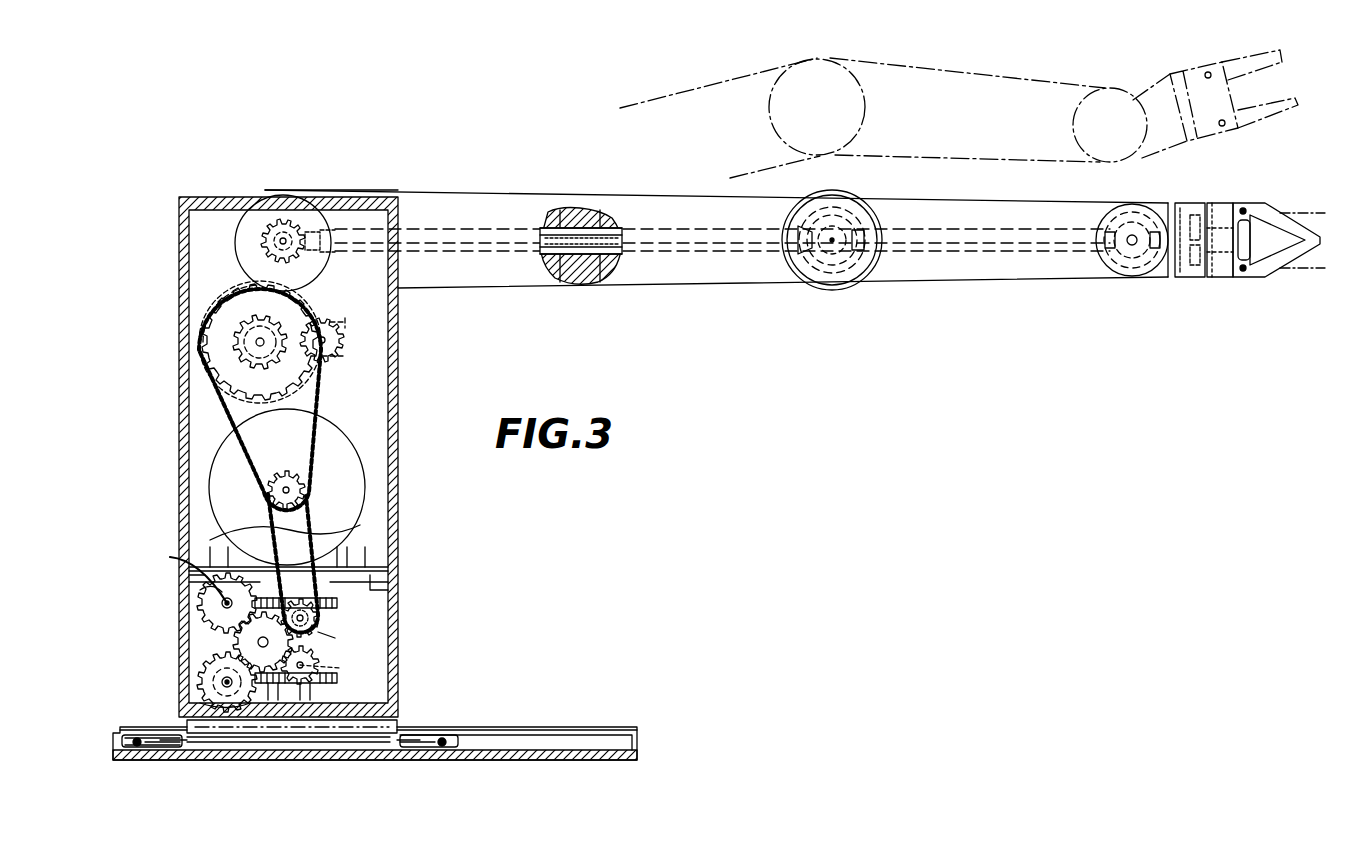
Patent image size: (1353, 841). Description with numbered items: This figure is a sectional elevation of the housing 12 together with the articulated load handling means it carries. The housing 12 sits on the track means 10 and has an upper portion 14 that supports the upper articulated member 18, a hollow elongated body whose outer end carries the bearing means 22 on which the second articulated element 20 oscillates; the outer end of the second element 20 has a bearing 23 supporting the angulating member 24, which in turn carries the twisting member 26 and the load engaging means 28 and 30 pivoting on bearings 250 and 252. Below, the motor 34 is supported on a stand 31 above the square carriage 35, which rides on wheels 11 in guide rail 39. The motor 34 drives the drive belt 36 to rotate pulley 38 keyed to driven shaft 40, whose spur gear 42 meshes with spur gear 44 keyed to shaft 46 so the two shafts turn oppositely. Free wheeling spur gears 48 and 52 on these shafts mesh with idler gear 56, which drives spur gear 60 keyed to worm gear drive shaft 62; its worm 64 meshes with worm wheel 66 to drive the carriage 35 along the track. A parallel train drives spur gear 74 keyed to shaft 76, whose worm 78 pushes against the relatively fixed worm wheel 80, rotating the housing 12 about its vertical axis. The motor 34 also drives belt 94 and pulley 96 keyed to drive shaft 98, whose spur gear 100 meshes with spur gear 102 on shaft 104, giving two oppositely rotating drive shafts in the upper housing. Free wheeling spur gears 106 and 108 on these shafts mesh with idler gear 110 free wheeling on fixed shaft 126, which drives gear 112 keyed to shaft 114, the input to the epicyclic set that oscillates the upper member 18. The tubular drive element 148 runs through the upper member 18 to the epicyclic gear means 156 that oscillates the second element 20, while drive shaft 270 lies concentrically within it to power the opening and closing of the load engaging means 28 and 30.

The track means 10 is at (656, 738).
The wheels 11 is at (150, 752).
The housing 12 is at (390, 430).
The upper portion of the housing 14 is at (223, 185).
The upper articulated member 18 is at (492, 210).
The second articulated element 20 is at (1022, 272).
The bearing means 22 is at (833, 252).
The bearing 23 is at (1132, 246).
The angulating member 24 is at (1158, 210).
The twisting member 26 is at (1190, 278).
The load engaging means 28 is at (1278, 262).
The load engaging means 30 is at (1270, 212).
The stand 31 is at (322, 712).
The motor 34 is at (350, 480).
The square carriage 35 is at (285, 748).
The drive belt 36 is at (345, 527).
The pulley 38 is at (312, 624).
The guide rail 39 is at (592, 727).
The driven shaft 40 is at (320, 618).
The spur gear 42 is at (335, 638).
The spur gear 44 is at (340, 668).
The shaft 46 is at (316, 662).
The free wheeling spur gear 48 is at (262, 585).
The free wheeling spur gear 52 is at (200, 676).
The idler gear 56 is at (233, 642).
The spur gear 60 is at (200, 604).
The worm gear drive shaft 62 is at (184, 573).
The worm 64 is at (205, 590).
The worm wheel 66 is at (340, 603).
The spur gear 74 is at (216, 688).
The shaft 76 is at (215, 702).
The worm 78 is at (232, 742).
The worm wheel 80 is at (342, 678).
The belt 94 is at (318, 408).
The pulley 96 is at (238, 370).
The drive shaft 98 is at (256, 346).
The spur gear 100 is at (252, 342).
The spur gear 102 is at (340, 340).
The shaft 104 is at (345, 360).
The free wheeling spur gear 106 is at (244, 336).
The free wheeling spur gear 108 is at (350, 322).
The idler gear 110 is at (320, 292).
The gear 112 is at (268, 248).
The shaft 114 is at (262, 236).
The fixed shaft 126 is at (236, 312).
The tubular drive element 148 is at (560, 212).
The epicyclic gear means 156 is at (786, 282).
The bearing 250 is at (1243, 207).
The bearing 252 is at (1244, 272).
The drive shaft 270 is at (610, 230).